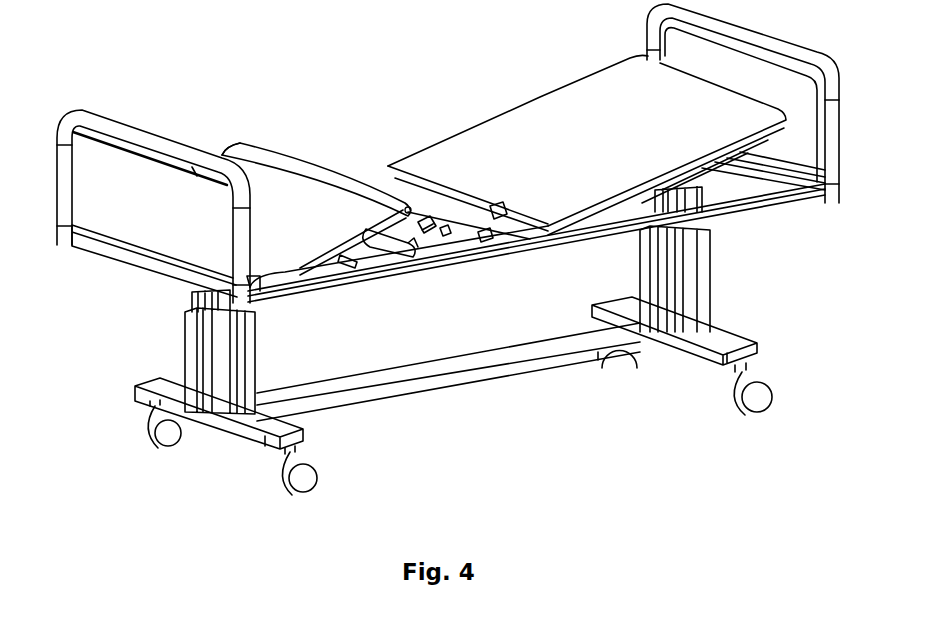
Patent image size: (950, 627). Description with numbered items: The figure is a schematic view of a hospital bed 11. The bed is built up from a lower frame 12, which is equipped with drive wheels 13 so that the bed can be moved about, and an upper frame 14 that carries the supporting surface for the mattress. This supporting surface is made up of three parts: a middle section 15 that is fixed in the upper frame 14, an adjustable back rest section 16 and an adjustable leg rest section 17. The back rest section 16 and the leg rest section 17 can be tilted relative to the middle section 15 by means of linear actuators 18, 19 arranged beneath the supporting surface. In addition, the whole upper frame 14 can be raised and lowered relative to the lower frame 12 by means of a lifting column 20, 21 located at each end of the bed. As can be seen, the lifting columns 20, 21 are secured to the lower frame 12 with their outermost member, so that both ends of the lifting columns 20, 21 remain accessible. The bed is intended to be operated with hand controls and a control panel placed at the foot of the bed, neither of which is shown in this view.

The hospital bed 11 is at (230, 52).
The lower frame 12 is at (735, 338).
The drive wheels 13 is at (170, 442).
The upper frame 14 is at (520, 250).
The middle section 15 is at (342, 165).
The back rest section 16 is at (518, 125).
The leg rest section 17 is at (238, 150).
The linear actuator 18 is at (445, 229).
The linear actuator 19 is at (397, 246).
The lifting column 20 is at (195, 362).
The lifting column 21 is at (683, 297).